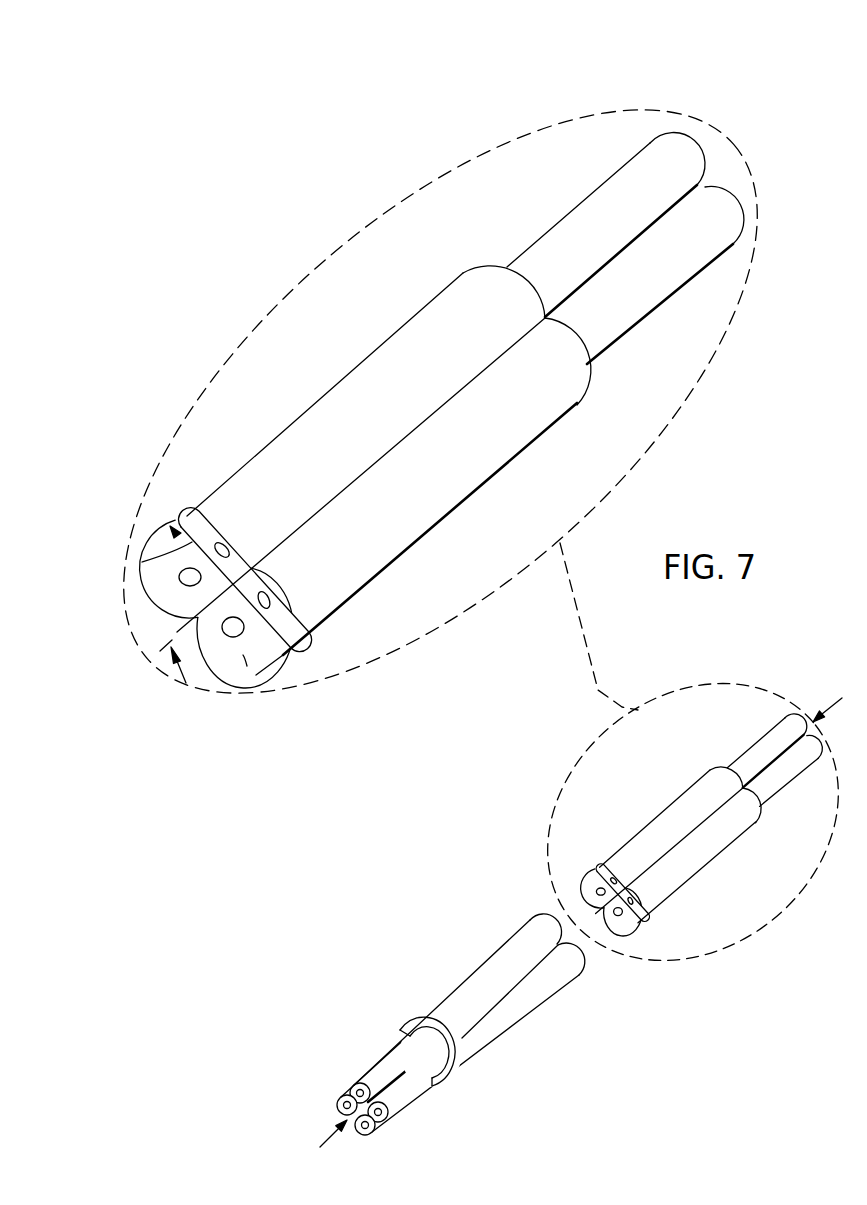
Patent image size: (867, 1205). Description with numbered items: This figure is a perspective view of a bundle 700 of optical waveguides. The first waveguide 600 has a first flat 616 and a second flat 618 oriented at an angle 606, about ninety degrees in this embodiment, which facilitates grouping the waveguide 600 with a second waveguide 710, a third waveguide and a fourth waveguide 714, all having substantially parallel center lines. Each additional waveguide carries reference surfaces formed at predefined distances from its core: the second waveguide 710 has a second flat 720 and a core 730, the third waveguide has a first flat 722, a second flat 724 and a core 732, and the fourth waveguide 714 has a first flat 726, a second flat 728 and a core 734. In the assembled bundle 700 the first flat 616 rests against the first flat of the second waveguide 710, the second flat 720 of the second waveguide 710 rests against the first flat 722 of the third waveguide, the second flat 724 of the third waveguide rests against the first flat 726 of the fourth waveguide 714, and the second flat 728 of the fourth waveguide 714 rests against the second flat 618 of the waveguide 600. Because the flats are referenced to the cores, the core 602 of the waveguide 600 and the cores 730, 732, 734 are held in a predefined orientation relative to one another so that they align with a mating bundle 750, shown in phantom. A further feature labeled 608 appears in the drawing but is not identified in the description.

The waveguide 600 is at (293, 447).
The core 602 is at (186, 515).
The angle 606 is at (688, 147).
The housing corner 608 is at (174, 530).
The first flat 616 is at (166, 552).
The second flat 618 is at (220, 542).
The bundle 700 is at (281, 275).
The second waveguide 710 is at (167, 611).
The fourth waveguide 714 is at (447, 470).
The second flat 720 is at (214, 650).
The first flat 722 is at (197, 618).
The second flat 724 is at (290, 651).
The first flat 726 is at (247, 666).
The second flat 728 is at (258, 580).
The core 730 is at (176, 580).
The core 732 is at (246, 630).
The core 734 is at (270, 600).
The mating bundle 750 is at (448, 970).